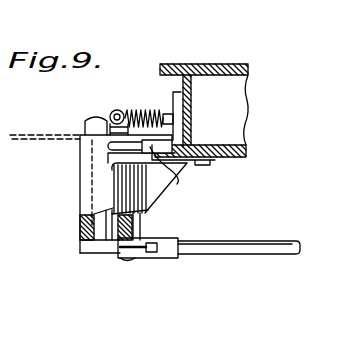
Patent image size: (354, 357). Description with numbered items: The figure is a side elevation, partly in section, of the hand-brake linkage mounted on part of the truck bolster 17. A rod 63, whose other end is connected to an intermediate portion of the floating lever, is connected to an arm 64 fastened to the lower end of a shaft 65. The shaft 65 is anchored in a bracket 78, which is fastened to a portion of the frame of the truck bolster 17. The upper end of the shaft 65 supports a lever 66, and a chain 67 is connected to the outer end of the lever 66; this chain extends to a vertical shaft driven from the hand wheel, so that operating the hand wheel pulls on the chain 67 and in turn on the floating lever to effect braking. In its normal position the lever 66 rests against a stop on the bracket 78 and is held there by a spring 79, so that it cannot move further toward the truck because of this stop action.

The truck bolster 17 is at (186, 72).
The rod 63 is at (240, 247).
The arm 64 is at (99, 246).
The shaft 65 is at (82, 220).
The lever 66 is at (84, 137).
The chain 67 is at (40, 129).
The bracket 78 is at (177, 184).
The spring 79 is at (136, 108).